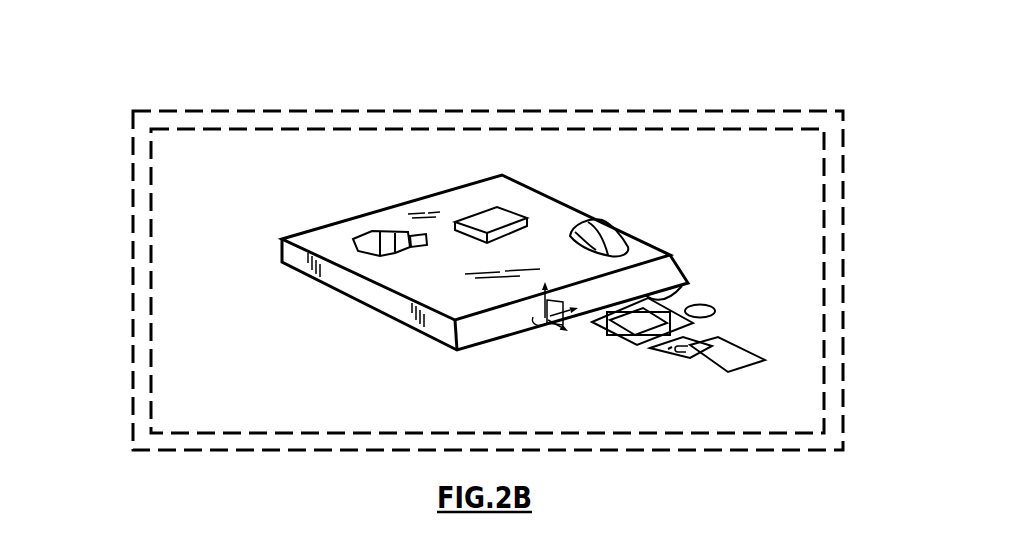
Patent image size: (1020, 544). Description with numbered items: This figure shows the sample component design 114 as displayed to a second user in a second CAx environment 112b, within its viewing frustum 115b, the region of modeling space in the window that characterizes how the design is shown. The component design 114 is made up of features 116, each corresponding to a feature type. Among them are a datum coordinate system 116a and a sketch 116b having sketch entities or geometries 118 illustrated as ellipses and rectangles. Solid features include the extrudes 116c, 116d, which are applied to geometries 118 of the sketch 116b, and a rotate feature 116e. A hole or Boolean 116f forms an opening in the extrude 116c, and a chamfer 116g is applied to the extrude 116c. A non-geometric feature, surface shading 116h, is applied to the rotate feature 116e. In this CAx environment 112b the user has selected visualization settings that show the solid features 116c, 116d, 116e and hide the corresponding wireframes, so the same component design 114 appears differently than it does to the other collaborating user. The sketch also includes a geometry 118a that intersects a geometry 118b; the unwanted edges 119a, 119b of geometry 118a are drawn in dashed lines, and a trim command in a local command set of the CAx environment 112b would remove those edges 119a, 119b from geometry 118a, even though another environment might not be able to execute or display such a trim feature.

The second CAx environment 112b is at (270, 104).
The viewing frustum 115b is at (179, 120).
The component design 114 is at (265, 196).
The features 116 is at (708, 304).
The datum coordinate system 116a is at (542, 323).
The sketch 116b is at (740, 314).
The extrude 116c is at (574, 194).
The extrude 116d is at (504, 205).
The rotate feature 116e is at (638, 234).
The hole or Boolean 116f is at (388, 221).
The chamfer 116g is at (468, 332).
The surface shading 116h is at (600, 221).
The sketch entities or geometries 118 is at (490, 345).
The geometry 118a is at (757, 355).
The geometry 118b is at (690, 337).
The unwanted edge 119a is at (670, 348).
The unwanted edge 119b is at (684, 352).